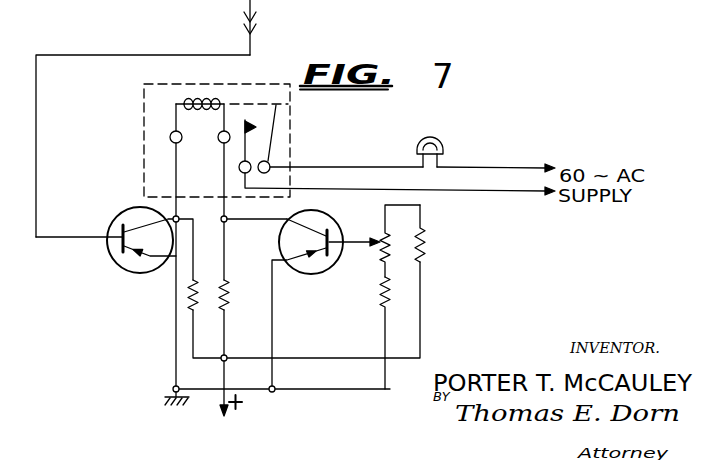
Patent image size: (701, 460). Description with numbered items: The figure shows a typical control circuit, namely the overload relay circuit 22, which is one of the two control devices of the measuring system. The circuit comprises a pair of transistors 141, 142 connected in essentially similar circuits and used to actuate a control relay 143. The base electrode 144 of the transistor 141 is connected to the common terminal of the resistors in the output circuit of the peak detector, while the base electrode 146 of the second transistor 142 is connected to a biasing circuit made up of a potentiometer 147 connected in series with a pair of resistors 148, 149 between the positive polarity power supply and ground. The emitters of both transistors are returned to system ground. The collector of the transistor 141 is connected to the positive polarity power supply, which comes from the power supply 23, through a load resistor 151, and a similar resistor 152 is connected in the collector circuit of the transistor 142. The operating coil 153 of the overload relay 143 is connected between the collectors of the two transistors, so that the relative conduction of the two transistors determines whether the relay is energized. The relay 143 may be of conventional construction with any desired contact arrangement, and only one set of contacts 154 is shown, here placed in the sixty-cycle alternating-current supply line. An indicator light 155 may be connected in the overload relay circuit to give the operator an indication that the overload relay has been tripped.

The overload relay circuit 22 is at (382, 125).
The power supply 23 is at (251, 382).
The transistor 141 is at (132, 275).
The second transistor 142 is at (306, 275).
The control relay 143 is at (142, 133).
The base electrode 144 is at (118, 238).
The base electrode 146 is at (339, 257).
The potentiometer 147 is at (381, 232).
The resistor 148 is at (383, 290).
The resistor 149 is at (428, 240).
The load resistor 151 is at (188, 290).
The resistor 152 is at (222, 283).
The operating coil 153 is at (218, 97).
The set of contacts 154 is at (262, 142).
The indicator light 155 is at (443, 140).